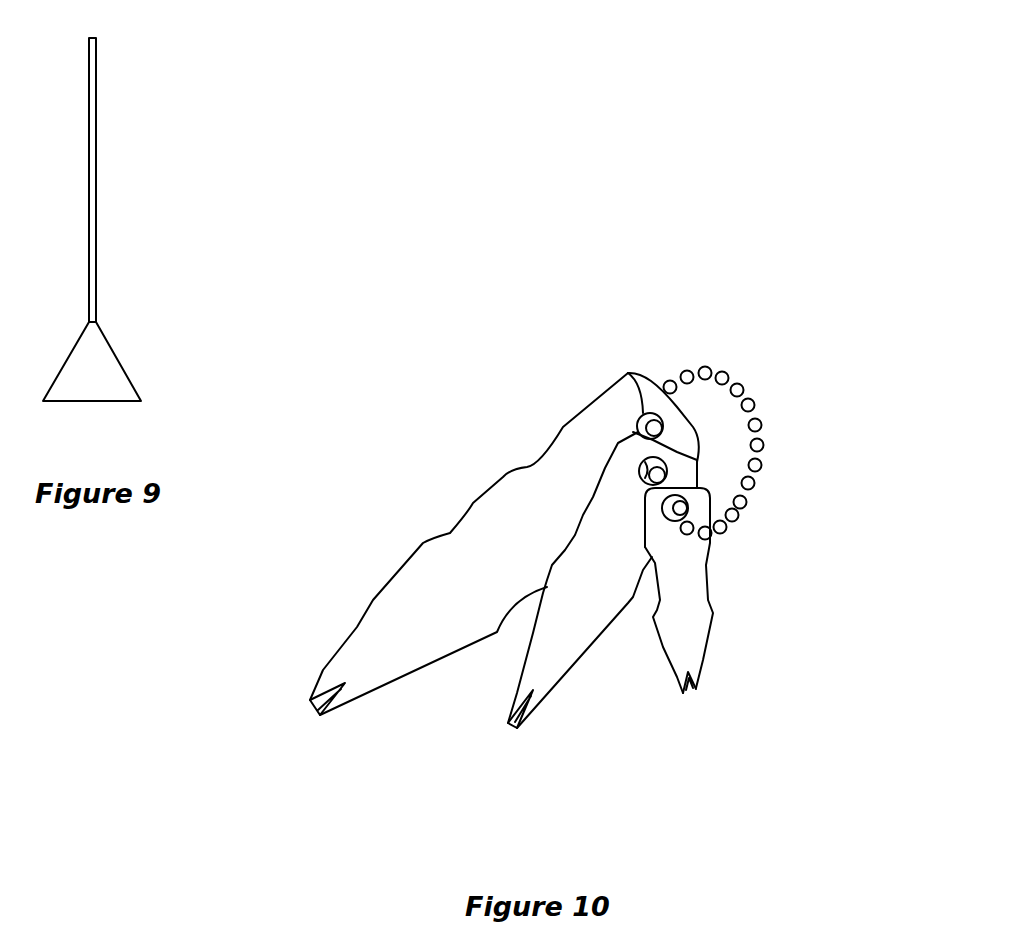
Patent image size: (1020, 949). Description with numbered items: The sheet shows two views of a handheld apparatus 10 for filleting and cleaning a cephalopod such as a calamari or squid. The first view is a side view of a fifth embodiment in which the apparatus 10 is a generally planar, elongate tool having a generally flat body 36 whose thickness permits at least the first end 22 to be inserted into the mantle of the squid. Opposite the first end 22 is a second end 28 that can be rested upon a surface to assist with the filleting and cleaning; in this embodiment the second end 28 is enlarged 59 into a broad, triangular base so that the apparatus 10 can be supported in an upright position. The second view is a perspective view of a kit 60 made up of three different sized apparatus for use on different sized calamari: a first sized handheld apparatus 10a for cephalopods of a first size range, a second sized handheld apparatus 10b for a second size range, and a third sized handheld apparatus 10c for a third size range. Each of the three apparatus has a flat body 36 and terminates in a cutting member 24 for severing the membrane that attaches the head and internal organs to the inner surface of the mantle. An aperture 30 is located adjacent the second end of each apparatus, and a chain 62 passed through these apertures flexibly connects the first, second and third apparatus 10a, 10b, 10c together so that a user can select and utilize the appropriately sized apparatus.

In FIG. 9, the handheld apparatus 10 is at (150, 190).
In FIG. 9, the first end 22 is at (104, 59).
In FIG. 9, the body 36 is at (90, 162).
In FIG. 10, the body 36 is at (532, 542).
In FIG. 9, the second end 28 is at (152, 366).
In FIG. 9, the enlarged second end 59 is at (106, 373).
In FIG. 10, the kit 60 is at (471, 405).
In FIG. 10, the aperture 30 is at (628, 373).
In FIG. 10, the chain 62 is at (722, 371).
In FIG. 10, the first sized handheld apparatus 10a is at (358, 568).
In FIG. 10, the second sized handheld apparatus 10b is at (586, 687).
In FIG. 10, the third sized handheld apparatus 10c is at (721, 658).
In FIG. 10, the cutting member 24 is at (311, 716).